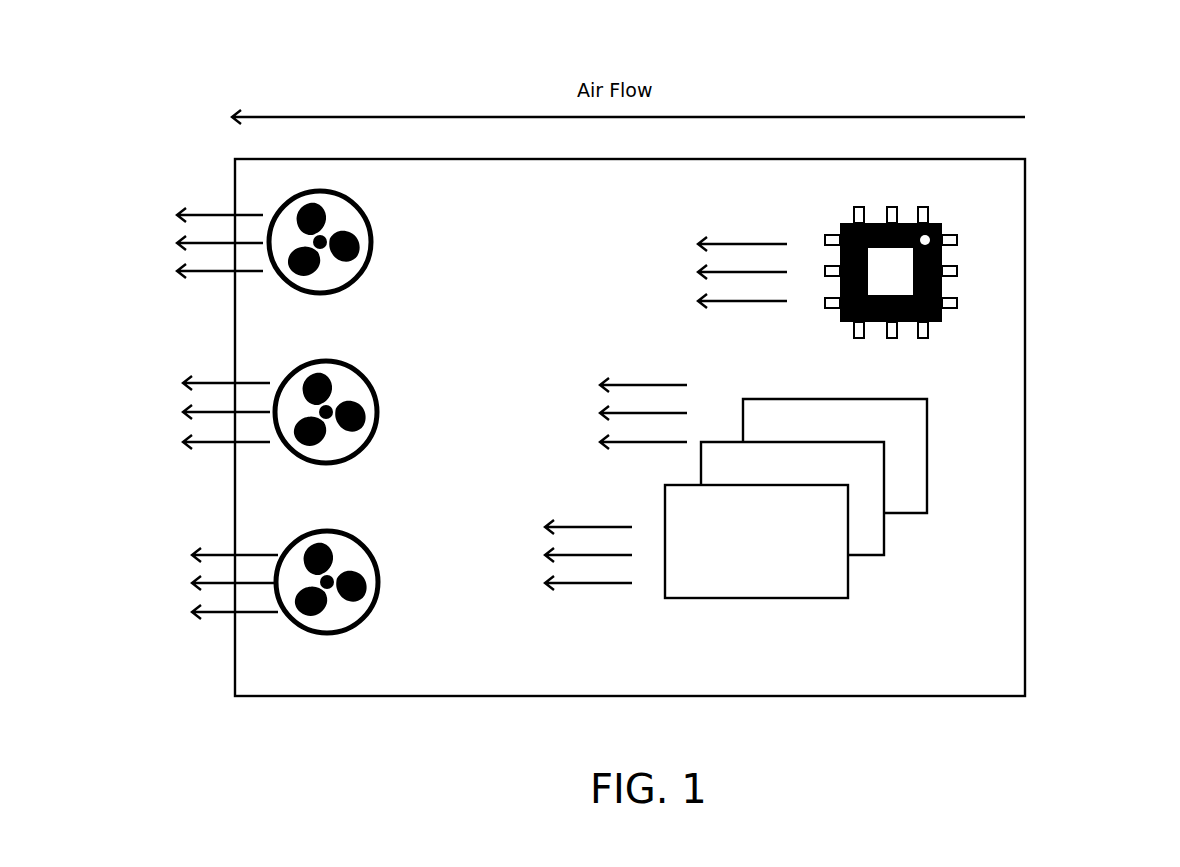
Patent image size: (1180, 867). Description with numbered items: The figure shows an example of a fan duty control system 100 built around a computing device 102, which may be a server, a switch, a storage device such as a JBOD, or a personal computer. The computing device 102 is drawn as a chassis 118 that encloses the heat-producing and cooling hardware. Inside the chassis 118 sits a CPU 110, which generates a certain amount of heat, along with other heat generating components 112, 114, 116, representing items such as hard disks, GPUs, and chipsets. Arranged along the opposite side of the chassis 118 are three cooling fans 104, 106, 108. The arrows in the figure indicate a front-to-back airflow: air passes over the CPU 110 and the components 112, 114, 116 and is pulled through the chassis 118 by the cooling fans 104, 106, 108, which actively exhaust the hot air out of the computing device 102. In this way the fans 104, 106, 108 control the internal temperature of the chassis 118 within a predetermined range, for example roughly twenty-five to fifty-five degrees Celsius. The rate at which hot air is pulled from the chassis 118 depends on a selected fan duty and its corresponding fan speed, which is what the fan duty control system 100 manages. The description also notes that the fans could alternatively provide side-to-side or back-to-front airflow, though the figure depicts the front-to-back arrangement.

The fan duty control system 100 is at (1115, 87).
The computing device 102 is at (1025, 272).
The cooling fan 104 is at (304, 328).
The cooling fan 106 is at (309, 503).
The cooling fan 108 is at (312, 670).
The CPU 110 is at (870, 368).
The heat generating component 112 is at (742, 553).
The heat generating component 114 is at (831, 472).
The heat generating component 116 is at (877, 426).
The chassis 118 is at (920, 652).